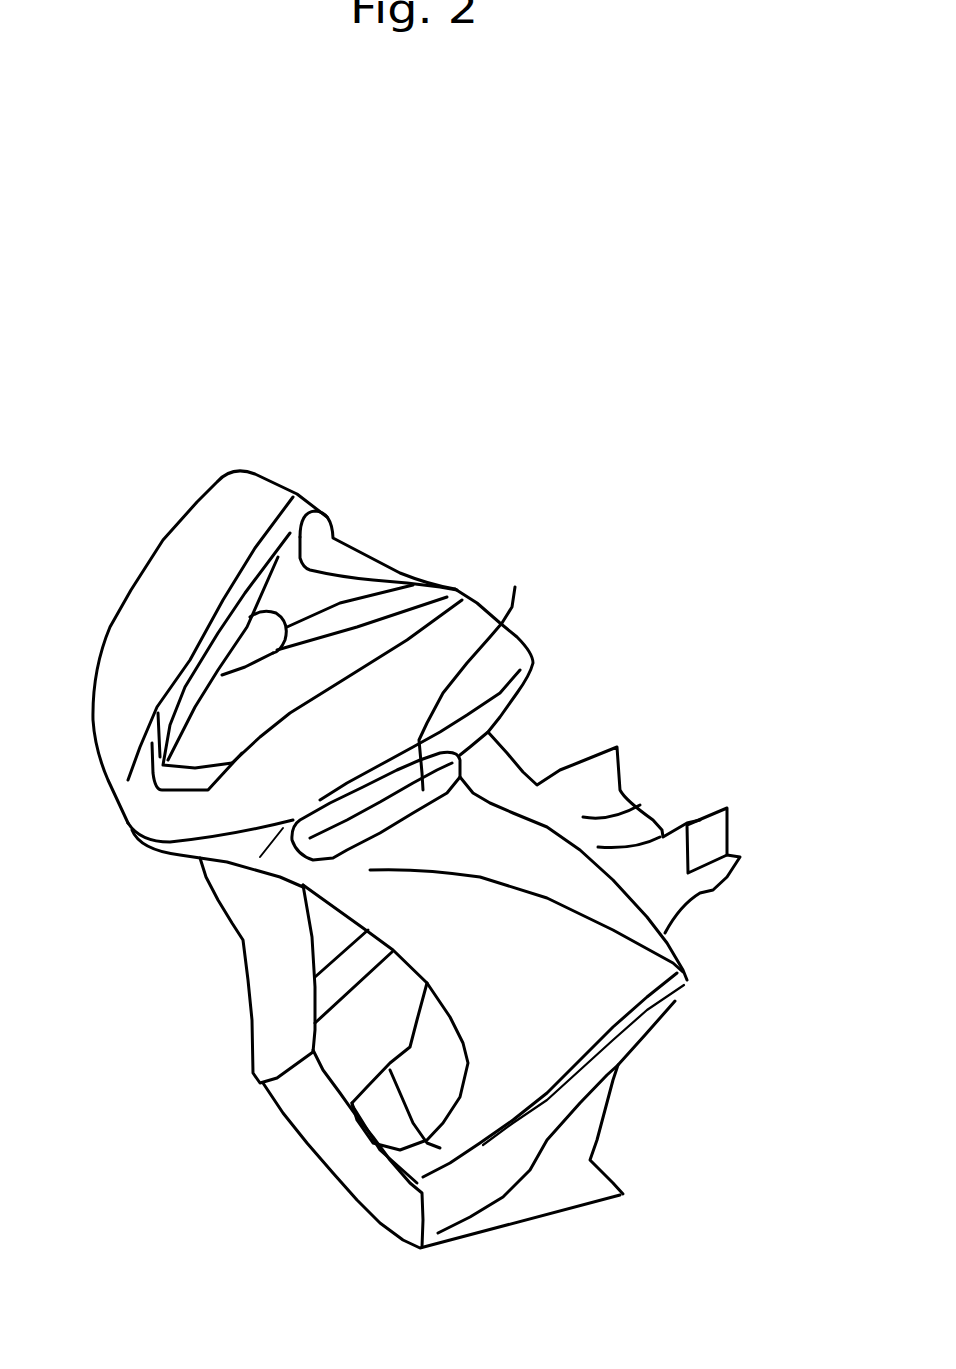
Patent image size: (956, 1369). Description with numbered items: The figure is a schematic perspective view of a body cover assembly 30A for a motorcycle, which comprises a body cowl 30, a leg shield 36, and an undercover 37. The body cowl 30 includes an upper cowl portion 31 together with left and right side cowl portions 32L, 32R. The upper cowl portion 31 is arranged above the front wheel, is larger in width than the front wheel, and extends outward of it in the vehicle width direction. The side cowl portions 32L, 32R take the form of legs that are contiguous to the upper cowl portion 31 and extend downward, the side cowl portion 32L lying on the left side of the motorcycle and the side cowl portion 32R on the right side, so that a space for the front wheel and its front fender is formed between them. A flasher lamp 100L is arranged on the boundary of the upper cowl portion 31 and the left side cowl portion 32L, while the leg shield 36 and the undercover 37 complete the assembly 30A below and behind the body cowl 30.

The body cowl 30 is at (293, 474).
The body cover assembly 30A is at (586, 455).
The upper cowl portion 31 is at (145, 637).
The flasher lamp 100L is at (515, 587).
The leg shield 36 is at (510, 780).
The side cowl portion 32R is at (267, 940).
The side cowl portion 32L is at (483, 1000).
The undercover 37 is at (543, 1190).